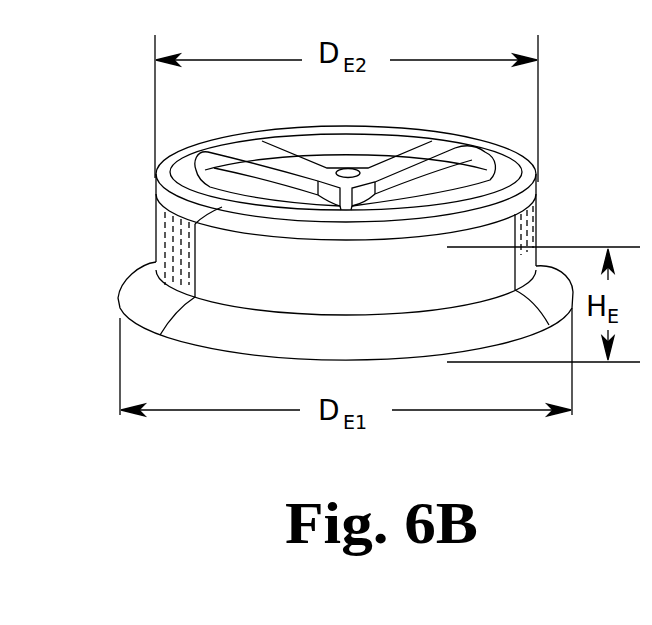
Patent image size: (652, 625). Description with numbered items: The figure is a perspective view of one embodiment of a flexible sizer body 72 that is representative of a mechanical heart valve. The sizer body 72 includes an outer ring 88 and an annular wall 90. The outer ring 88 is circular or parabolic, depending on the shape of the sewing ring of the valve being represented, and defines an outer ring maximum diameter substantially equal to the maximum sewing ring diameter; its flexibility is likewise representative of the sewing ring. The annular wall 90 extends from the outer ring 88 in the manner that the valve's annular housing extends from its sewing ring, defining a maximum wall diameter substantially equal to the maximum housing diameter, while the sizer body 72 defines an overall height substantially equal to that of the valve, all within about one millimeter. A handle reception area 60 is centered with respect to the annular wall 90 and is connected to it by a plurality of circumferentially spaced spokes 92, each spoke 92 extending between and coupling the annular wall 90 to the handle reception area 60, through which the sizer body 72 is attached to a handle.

The handle reception area 60 is at (352, 168).
The sizer body 72 is at (560, 106).
The outer ring 88 is at (141, 280).
The annular wall 90 is at (540, 220).
The spokes 92 is at (257, 148).